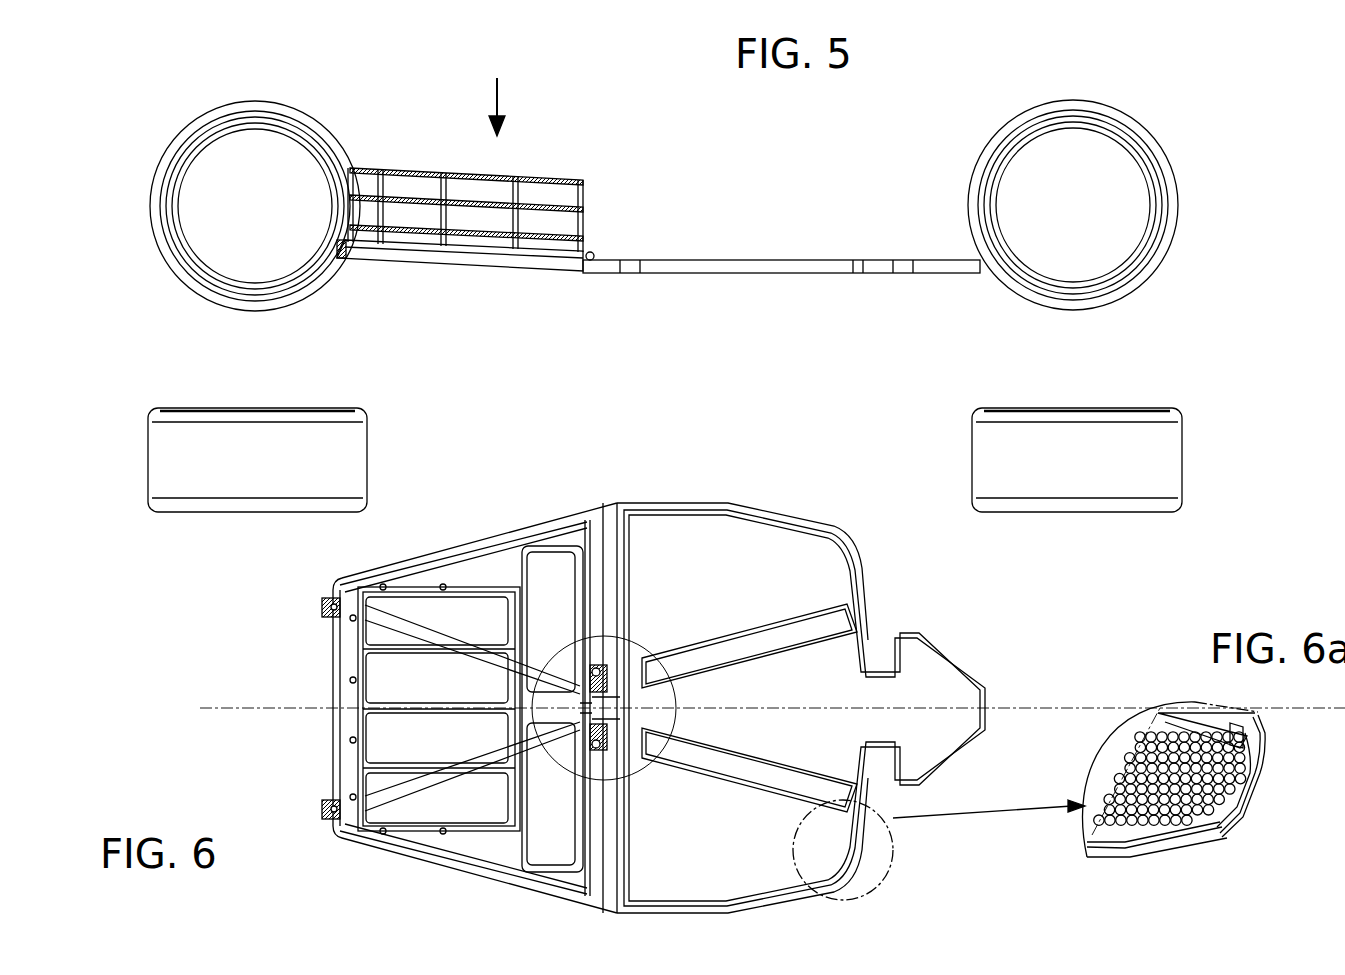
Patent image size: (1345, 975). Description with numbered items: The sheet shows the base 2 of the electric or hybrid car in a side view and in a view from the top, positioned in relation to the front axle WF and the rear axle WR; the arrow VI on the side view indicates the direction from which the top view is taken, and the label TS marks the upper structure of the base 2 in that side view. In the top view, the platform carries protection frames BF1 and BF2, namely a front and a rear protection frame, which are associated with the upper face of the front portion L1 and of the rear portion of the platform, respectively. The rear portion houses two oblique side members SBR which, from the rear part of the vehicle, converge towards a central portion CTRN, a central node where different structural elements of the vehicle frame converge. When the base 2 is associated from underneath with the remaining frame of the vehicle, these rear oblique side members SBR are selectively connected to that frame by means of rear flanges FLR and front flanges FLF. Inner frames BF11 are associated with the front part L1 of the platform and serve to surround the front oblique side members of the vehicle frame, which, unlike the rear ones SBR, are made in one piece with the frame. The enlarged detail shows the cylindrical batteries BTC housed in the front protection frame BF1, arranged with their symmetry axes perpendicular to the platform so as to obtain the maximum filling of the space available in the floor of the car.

In FIG. 5, the rear axle WR is at (152, 212).
In FIG. 6, the rear axle WR is at (160, 489).
In FIG. 5, the front axle WF is at (1178, 170).
In FIG. 6, the front axle WF is at (1160, 489).
In FIG. 5, the tilting structure TS is at (608, 150).
In FIG. 5, the view direction VI is at (498, 93).
In FIG. 5, the base 2 is at (634, 290).
In FIG. 6, the base 2 is at (790, 494).
In FIG. 6, the front flanges FLF is at (602, 645).
In FIG. 6, the rear flanges FLR is at (306, 604).
In FIG. 6, the oblique side members SBR is at (412, 622).
In FIG. 6, the rear protection frame BF2 is at (535, 872).
In FIG. 6, the inner frames BF11 is at (822, 598).
In FIG. 6, the front portion L1 is at (800, 680).
In FIG. 6, the central portion CTRN is at (636, 648).
In FIG. 6, the front protection frame BF1 is at (865, 850).
In FIG. 6A, the front protection frame BF1 is at (1240, 812).
In FIG. 6A, the cylindrical batteries BTC is at (1225, 835).